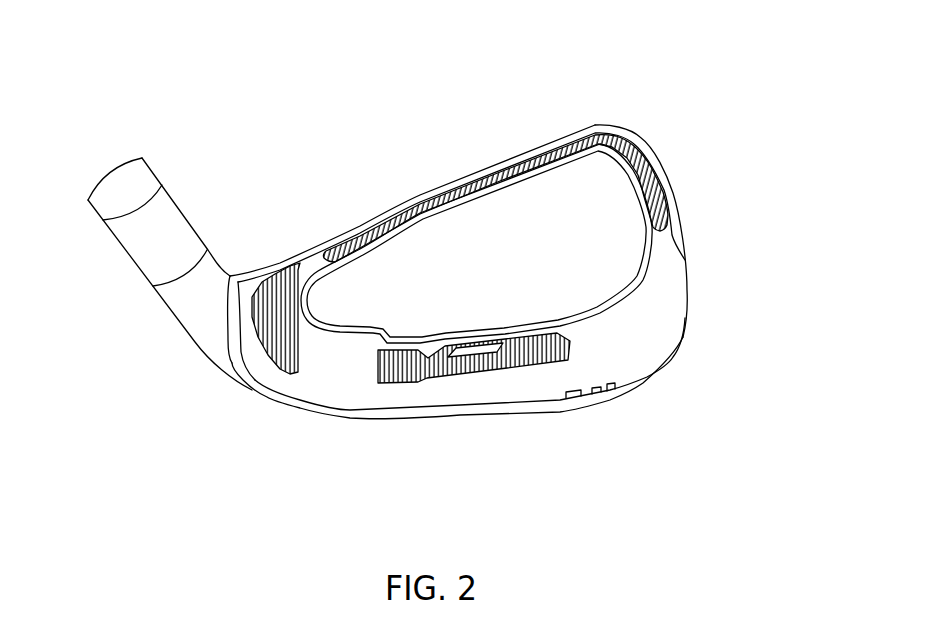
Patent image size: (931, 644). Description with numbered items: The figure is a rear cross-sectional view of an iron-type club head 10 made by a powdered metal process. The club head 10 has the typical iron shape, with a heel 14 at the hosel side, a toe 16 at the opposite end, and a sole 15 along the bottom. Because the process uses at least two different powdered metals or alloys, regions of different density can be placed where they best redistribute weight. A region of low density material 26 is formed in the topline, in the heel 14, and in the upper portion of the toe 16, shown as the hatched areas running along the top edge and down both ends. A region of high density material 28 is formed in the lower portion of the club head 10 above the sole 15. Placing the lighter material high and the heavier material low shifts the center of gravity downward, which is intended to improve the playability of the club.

The club head 10 is at (383, 155).
The heel 14 is at (194, 341).
The sole 15 is at (408, 420).
The toe 16 is at (707, 279).
The region of low density material 26 is at (657, 181).
The region of high density material 28 is at (467, 378).